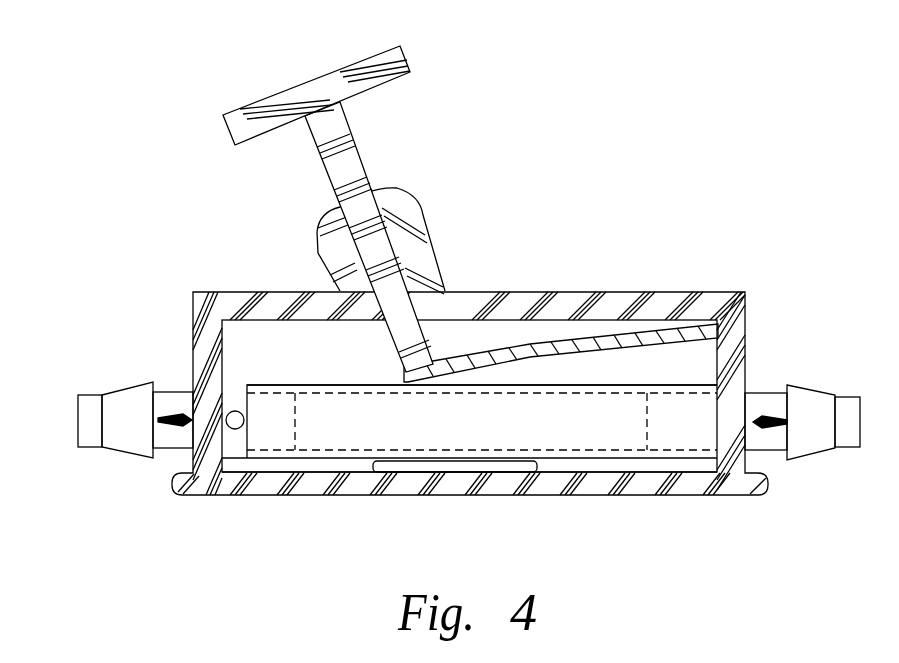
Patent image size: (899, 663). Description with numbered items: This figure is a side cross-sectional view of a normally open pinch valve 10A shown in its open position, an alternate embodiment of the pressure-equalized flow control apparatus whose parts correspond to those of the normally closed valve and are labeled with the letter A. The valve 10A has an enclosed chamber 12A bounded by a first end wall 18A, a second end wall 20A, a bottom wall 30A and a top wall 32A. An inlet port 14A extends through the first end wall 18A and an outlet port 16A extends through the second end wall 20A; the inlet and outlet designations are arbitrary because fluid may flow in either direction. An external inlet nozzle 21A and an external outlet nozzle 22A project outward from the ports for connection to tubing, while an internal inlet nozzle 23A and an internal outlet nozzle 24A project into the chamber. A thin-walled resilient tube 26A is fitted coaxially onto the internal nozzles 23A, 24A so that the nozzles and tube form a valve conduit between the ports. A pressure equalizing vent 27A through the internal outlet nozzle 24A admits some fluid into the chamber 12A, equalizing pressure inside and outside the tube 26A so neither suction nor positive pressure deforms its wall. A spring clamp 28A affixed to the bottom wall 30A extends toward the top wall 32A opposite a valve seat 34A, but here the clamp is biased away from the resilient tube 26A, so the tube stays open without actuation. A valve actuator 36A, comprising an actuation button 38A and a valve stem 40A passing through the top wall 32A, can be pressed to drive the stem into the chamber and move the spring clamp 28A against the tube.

The valve 10A is at (793, 225).
The enclosed chamber 12A is at (703, 495).
The inlet port 14A is at (757, 422).
The outlet port 16A is at (158, 418).
The first end wall 18A is at (746, 322).
The second end wall 20A is at (192, 322).
The external inlet nozzle 21A is at (813, 388).
The external outlet nozzle 22A is at (118, 453).
The internal inlet nozzle 23A is at (685, 447).
The internal outlet nozzle 24A is at (270, 443).
The resilient tube 26A is at (352, 383).
The pressure equalizing vent 27A is at (228, 425).
The spring clamp 28A is at (522, 347).
The bottom wall 30A is at (398, 497).
The top wall 32A is at (607, 292).
The valve seat 34A is at (437, 468).
The valve actuator 36A is at (310, 194).
The actuation button 38A is at (410, 57).
The valve stem 40A is at (380, 160).